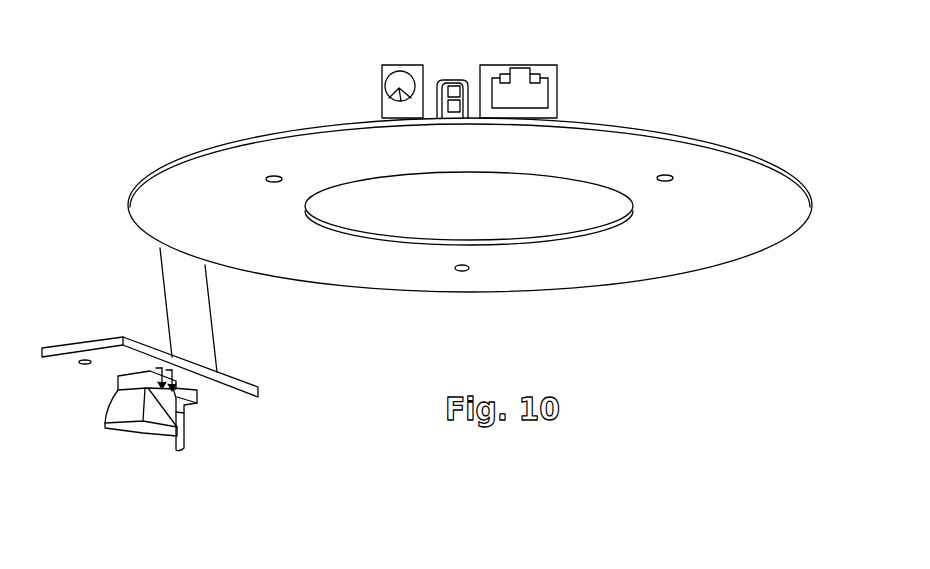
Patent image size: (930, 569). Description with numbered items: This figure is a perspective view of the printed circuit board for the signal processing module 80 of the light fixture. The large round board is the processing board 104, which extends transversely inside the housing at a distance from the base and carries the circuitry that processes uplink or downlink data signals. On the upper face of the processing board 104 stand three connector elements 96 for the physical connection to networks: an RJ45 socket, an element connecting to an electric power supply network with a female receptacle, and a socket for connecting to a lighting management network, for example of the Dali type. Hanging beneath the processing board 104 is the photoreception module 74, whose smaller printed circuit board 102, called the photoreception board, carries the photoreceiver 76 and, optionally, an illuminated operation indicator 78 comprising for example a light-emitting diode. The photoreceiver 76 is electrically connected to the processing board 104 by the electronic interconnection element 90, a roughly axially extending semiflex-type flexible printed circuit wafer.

The photoreception module 74 is at (164, 381).
The photoreceiver 76 is at (143, 435).
The illuminated operation indicator 78 is at (187, 445).
The module for processing of data signals 80 is at (750, 138).
The electronic interconnection element 90 is at (203, 318).
The connector element 96 is at (400, 68).
The printed circuit board 102 is at (88, 340).
The printed circuit board 104 is at (233, 178).